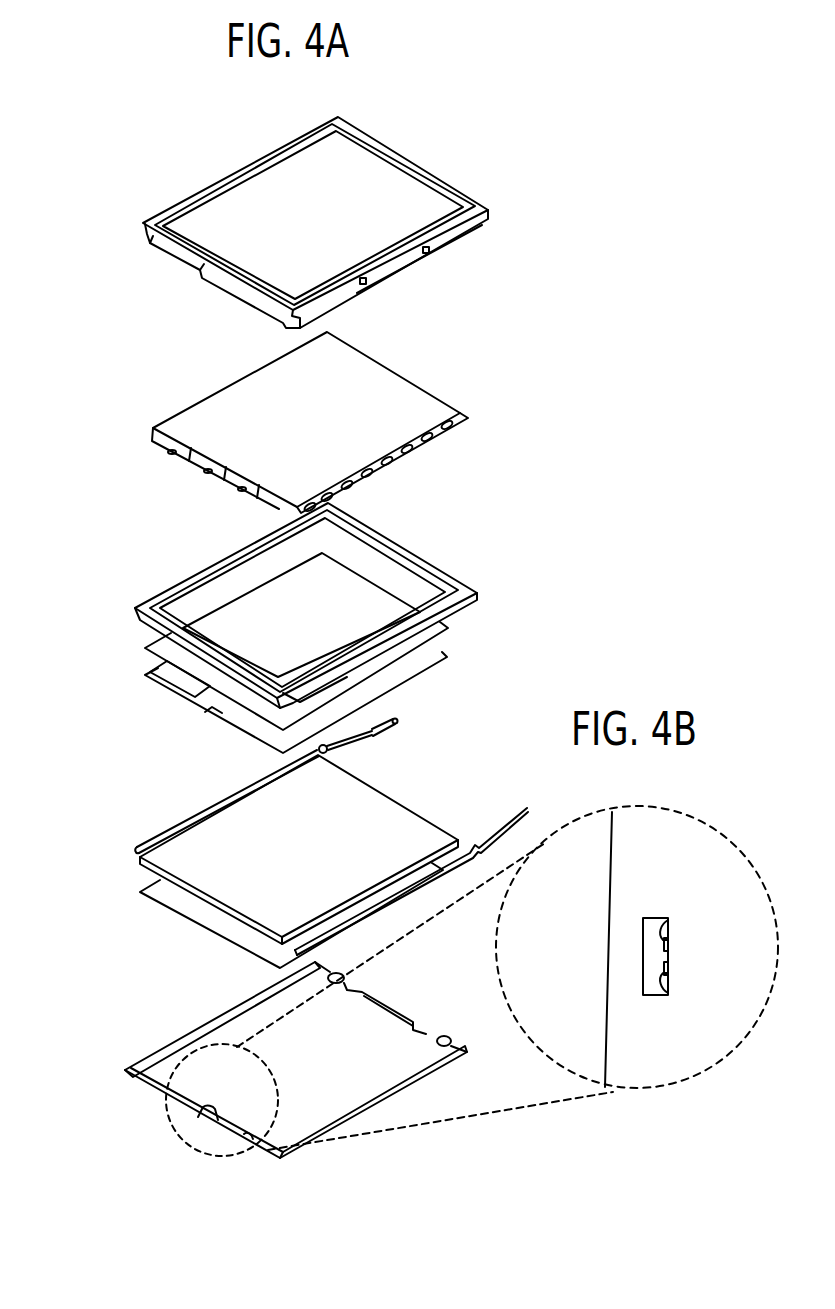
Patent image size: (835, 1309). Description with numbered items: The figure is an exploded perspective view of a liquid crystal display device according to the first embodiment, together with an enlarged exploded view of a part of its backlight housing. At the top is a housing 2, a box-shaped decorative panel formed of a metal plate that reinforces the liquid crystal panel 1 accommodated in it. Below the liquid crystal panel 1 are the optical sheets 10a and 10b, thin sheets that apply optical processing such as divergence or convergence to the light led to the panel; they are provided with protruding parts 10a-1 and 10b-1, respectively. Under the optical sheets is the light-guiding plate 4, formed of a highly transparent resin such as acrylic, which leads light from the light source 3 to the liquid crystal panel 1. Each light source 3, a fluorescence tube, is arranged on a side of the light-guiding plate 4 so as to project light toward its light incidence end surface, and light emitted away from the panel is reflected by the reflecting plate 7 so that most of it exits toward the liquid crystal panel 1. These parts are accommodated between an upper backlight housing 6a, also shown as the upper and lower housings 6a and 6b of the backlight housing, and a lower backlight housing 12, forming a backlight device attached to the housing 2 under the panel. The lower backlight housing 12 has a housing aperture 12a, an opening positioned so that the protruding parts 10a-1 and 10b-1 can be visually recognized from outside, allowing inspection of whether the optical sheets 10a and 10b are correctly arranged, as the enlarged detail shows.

In FIG. 4A, the liquid crystal panel 1 is at (215, 433).
In FIG. 4A, the housing 2 is at (232, 292).
In FIG. 4A, the light source 3 is at (197, 813).
In FIG. 4A, the light-guiding plate 4 is at (400, 805).
In FIG. 4A, the upper backlight housing 6a is at (150, 1050).
In FIG. 4A, the lower housing 6b is at (418, 560).
In FIG. 4A, the reflecting plate 7 is at (172, 908).
In FIG. 4A, the optical sheet 10a is at (447, 624).
In FIG. 4A, the protruding part 10a-1 is at (150, 672).
In FIG. 4B, the protruding part 10a-1 is at (660, 920).
In FIG. 4A, the optical sheet 10b is at (447, 654).
In FIG. 4A, the protruding part 10b-1 is at (205, 712).
In FIG. 4B, the protruding part 10b-1 is at (655, 995).
In FIG. 4A, the lower backlight housing 12 is at (194, 1115).
In FIG. 4A, the housing aperture 12a is at (208, 1120).
In FIG. 4B, the housing aperture 12a is at (643, 948).